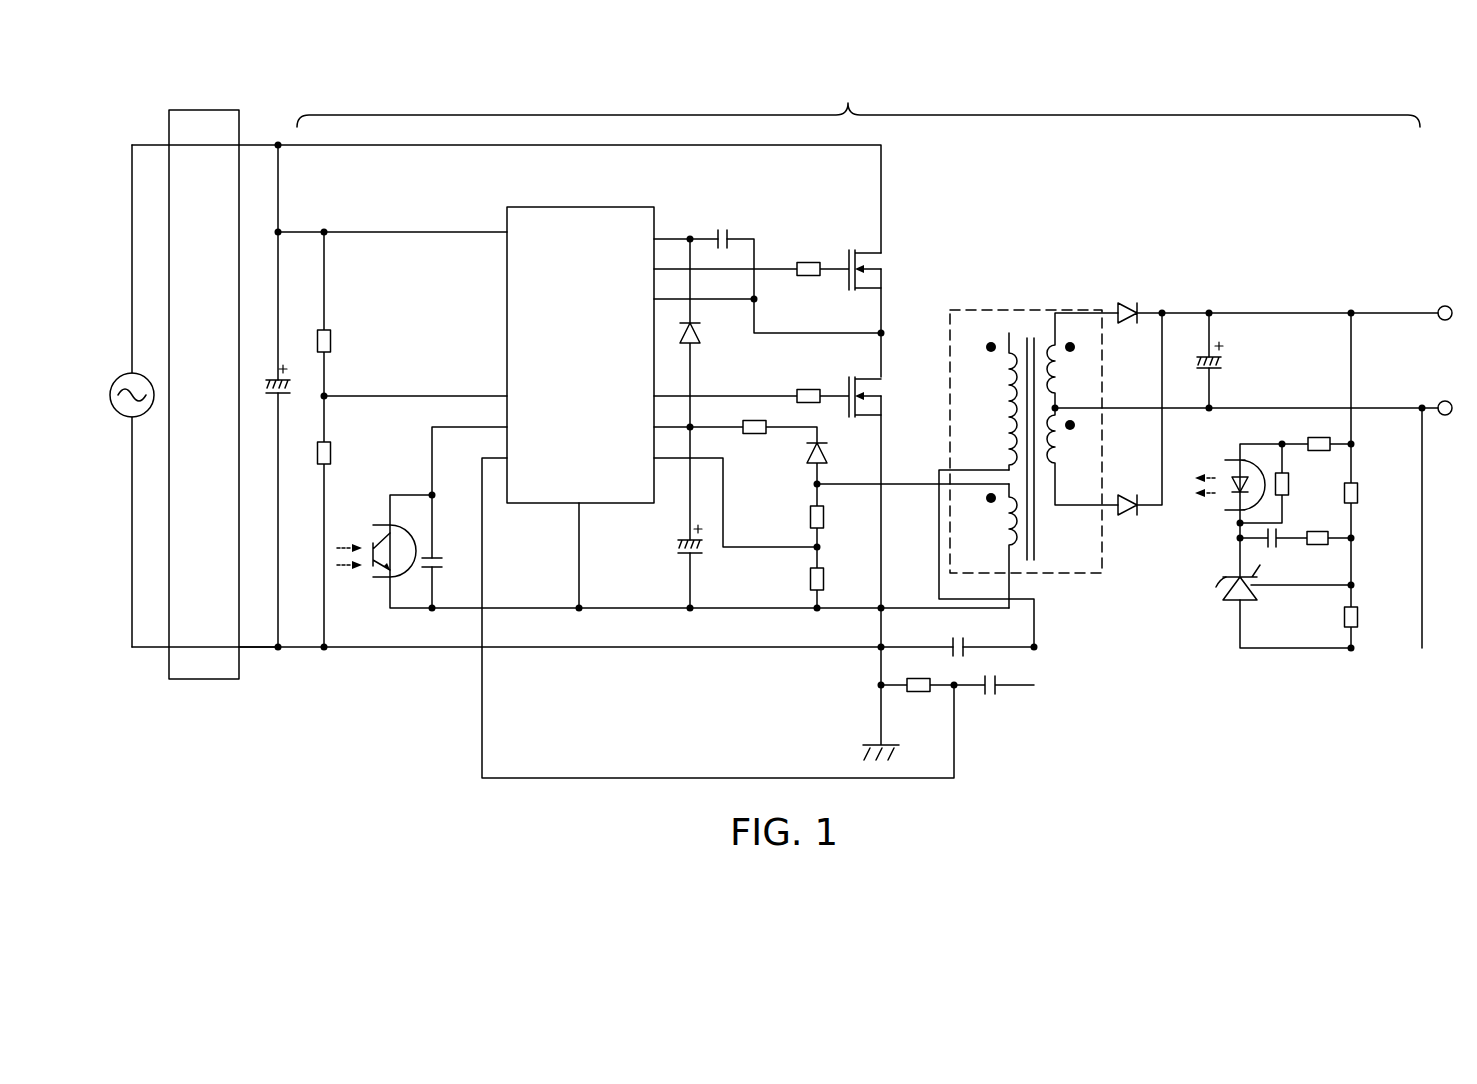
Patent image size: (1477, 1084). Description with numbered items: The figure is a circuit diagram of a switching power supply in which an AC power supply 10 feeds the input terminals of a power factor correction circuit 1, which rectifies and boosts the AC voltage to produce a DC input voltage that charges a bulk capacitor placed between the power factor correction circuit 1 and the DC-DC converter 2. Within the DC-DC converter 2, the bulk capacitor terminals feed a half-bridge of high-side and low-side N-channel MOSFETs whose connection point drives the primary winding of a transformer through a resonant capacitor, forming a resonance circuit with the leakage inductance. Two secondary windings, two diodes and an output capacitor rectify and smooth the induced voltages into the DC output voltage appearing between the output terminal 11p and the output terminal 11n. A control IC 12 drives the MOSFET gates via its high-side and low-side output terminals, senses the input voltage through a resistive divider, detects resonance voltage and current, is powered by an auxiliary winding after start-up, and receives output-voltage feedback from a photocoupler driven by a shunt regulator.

The power factor correction circuit 1 is at (208, 110).
The DC-DC converter 2 is at (802, 427).
The AC power supply 10 is at (131, 371).
The control IC 12 is at (560, 207).
The output terminal 11p is at (1445, 306).
The output terminal 11n is at (1445, 415).